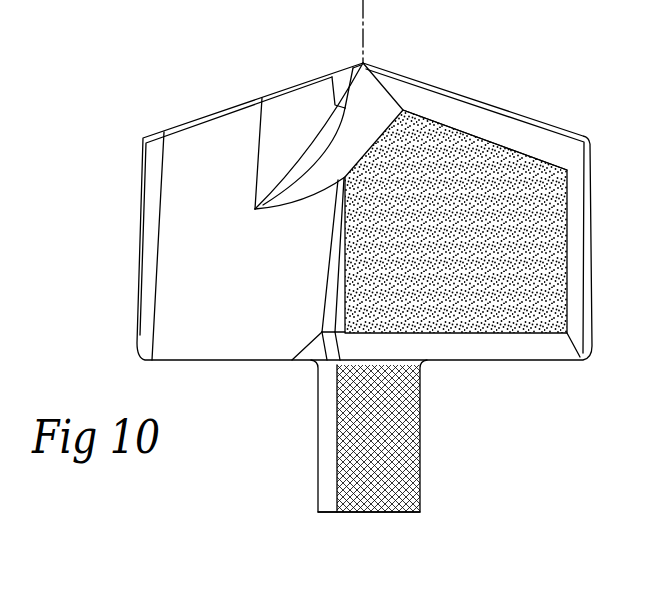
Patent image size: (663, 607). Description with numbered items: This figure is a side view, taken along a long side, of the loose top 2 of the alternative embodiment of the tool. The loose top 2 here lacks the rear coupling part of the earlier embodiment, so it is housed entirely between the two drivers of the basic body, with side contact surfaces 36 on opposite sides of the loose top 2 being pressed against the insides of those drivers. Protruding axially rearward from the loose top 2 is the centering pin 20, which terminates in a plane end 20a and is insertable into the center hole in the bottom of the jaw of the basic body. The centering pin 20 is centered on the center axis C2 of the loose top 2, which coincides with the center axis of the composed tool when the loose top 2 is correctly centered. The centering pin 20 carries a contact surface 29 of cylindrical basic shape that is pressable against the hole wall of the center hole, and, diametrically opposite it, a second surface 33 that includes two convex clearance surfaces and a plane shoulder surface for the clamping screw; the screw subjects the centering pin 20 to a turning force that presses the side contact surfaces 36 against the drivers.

The loose top 2 is at (553, 101).
The center axis of the loose top C2 is at (363, 20).
The side contact surfaces 36 is at (479, 266).
The contact surface 29 is at (395, 451).
The second surface 33 is at (326, 395).
The centering pin 20 is at (315, 512).
The plane end 20a is at (373, 512).